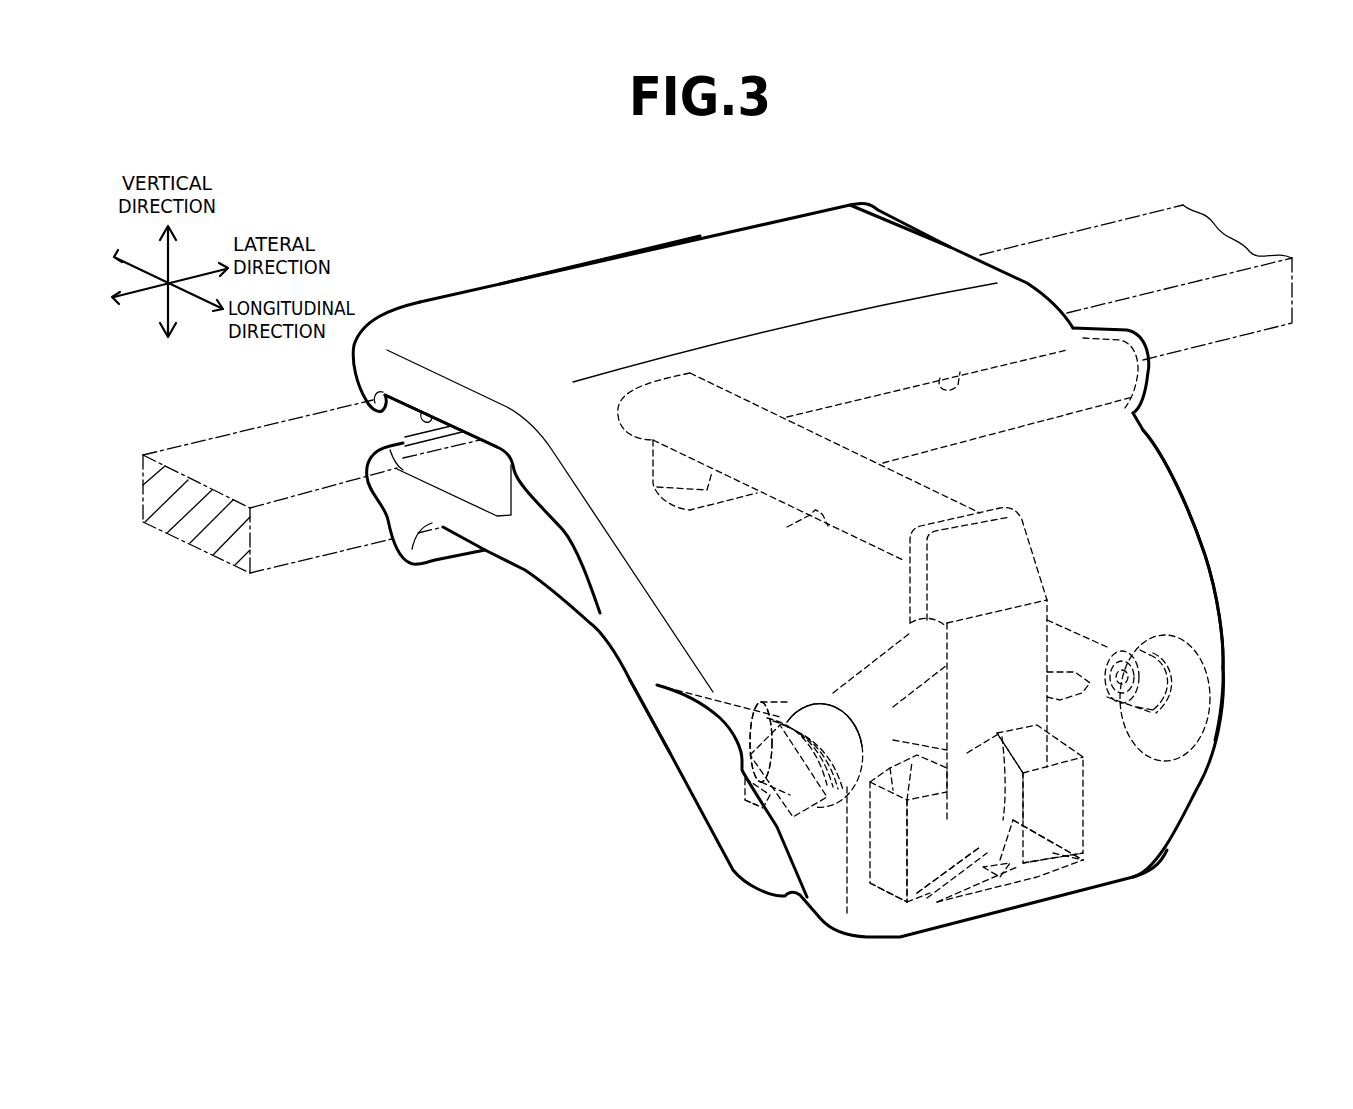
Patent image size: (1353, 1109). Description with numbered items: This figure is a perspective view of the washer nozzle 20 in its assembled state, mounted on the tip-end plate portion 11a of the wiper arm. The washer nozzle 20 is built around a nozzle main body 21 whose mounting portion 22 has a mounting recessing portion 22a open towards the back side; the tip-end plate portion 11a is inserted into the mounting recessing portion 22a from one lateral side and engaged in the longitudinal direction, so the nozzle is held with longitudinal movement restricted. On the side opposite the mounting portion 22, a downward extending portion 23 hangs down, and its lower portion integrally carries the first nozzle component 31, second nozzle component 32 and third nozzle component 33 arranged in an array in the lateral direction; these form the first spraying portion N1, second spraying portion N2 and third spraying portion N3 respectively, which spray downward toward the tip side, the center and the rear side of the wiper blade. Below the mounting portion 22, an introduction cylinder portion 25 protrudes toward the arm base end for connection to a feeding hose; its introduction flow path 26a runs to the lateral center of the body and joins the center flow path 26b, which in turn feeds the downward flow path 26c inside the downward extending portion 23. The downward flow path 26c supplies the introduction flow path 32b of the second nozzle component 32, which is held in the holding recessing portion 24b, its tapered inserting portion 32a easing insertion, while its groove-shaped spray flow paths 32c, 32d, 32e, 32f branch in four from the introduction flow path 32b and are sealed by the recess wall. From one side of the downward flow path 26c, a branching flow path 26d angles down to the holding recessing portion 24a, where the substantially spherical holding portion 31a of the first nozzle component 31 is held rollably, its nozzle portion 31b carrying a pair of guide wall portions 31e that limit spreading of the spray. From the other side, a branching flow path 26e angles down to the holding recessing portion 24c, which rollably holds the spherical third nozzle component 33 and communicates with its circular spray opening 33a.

The tip-end plate portion 11a is at (1068, 232).
The washer nozzle 20 is at (746, 214).
The nozzle main body 21 is at (877, 210).
The mounting portion 22 is at (606, 278).
The mounting recessing portion 22a is at (438, 418).
The downward extending portion 23 is at (1160, 502).
The holding recessing portion 24a is at (817, 805).
The holding recessing portion 24b is at (1078, 790).
The holding recessing portion 24c is at (1123, 715).
The introduction cylinder portion 25 is at (1100, 325).
The introduction flow path 26a is at (958, 382).
The center flow path 26b is at (787, 526).
The downward flow path 26c is at (958, 695).
The branching flow path 26d is at (860, 668).
The branching flow path 26e is at (1047, 693).
The first nozzle component 31 is at (845, 640).
The holding portion 31a is at (809, 703).
The nozzle portion 31b is at (760, 702).
The guide wall portions 31e is at (748, 795).
The second nozzle component 32 is at (1075, 825).
The inserting portion 32a is at (907, 727).
The introduction flow path 32b is at (957, 808).
The spray flow path 32c is at (917, 917).
The spray flow path 32d is at (983, 877).
The spray flow path 32e is at (1017, 893).
The spray flow path 32f is at (1097, 887).
The third nozzle component 33 is at (1148, 642).
The spray opening 33a is at (1103, 655).
The first spraying portion N1 is at (668, 752).
The second spraying portion N2 is at (1137, 880).
The third spraying portion N3 is at (1224, 690).